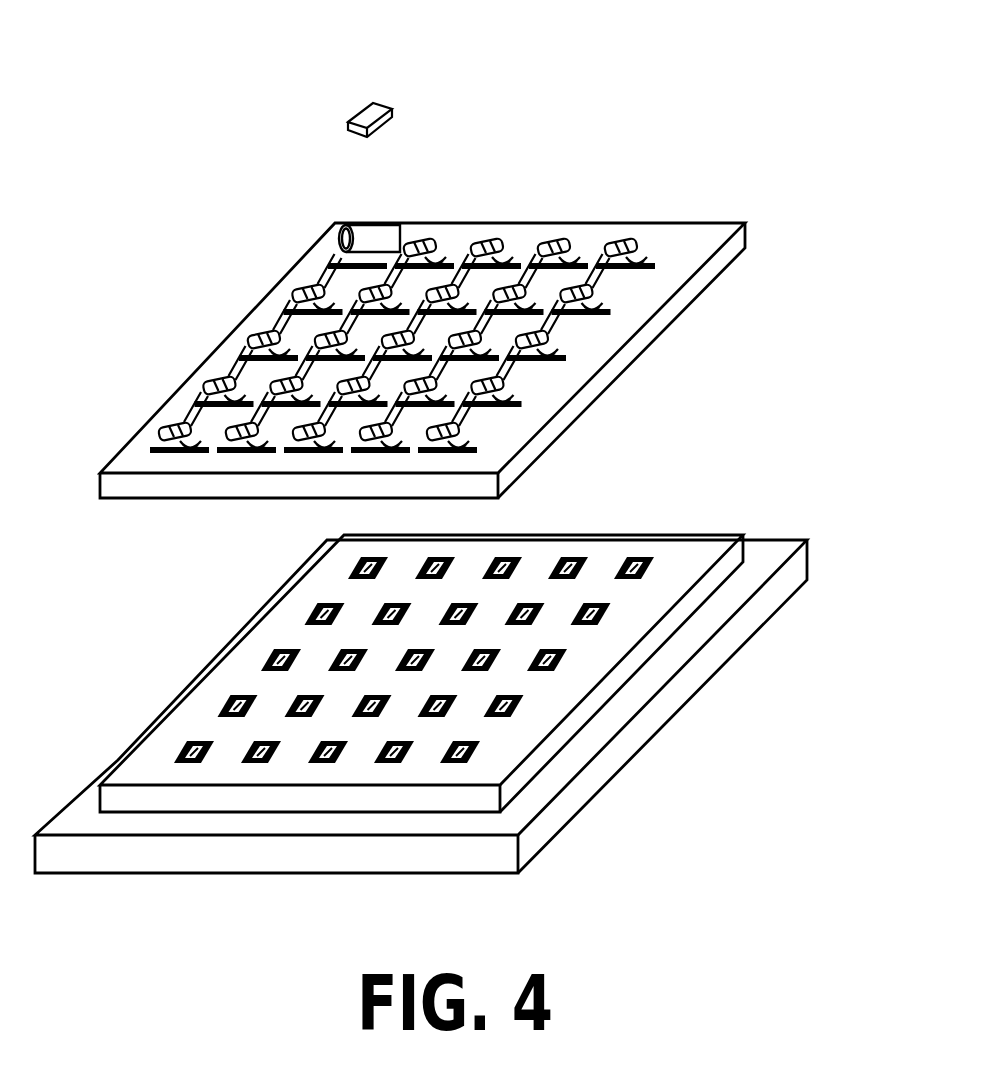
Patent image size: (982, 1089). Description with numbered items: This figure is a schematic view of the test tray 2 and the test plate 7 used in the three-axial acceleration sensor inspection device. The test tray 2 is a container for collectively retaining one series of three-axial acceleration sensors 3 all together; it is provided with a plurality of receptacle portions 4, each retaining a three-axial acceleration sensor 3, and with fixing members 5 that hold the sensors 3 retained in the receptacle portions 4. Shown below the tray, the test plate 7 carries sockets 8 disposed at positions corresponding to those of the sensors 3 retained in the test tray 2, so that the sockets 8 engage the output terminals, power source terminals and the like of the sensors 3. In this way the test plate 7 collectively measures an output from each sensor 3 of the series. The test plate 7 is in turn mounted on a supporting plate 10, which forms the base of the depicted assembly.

The test tray 2 is at (683, 250).
The three-axial acceleration sensor 3 is at (393, 112).
The receptacle portion 4 is at (398, 245).
The fixing member 5 is at (627, 253).
The test plate 7 is at (697, 557).
The socket 8 is at (645, 556).
The supporting plate 10 is at (767, 553).